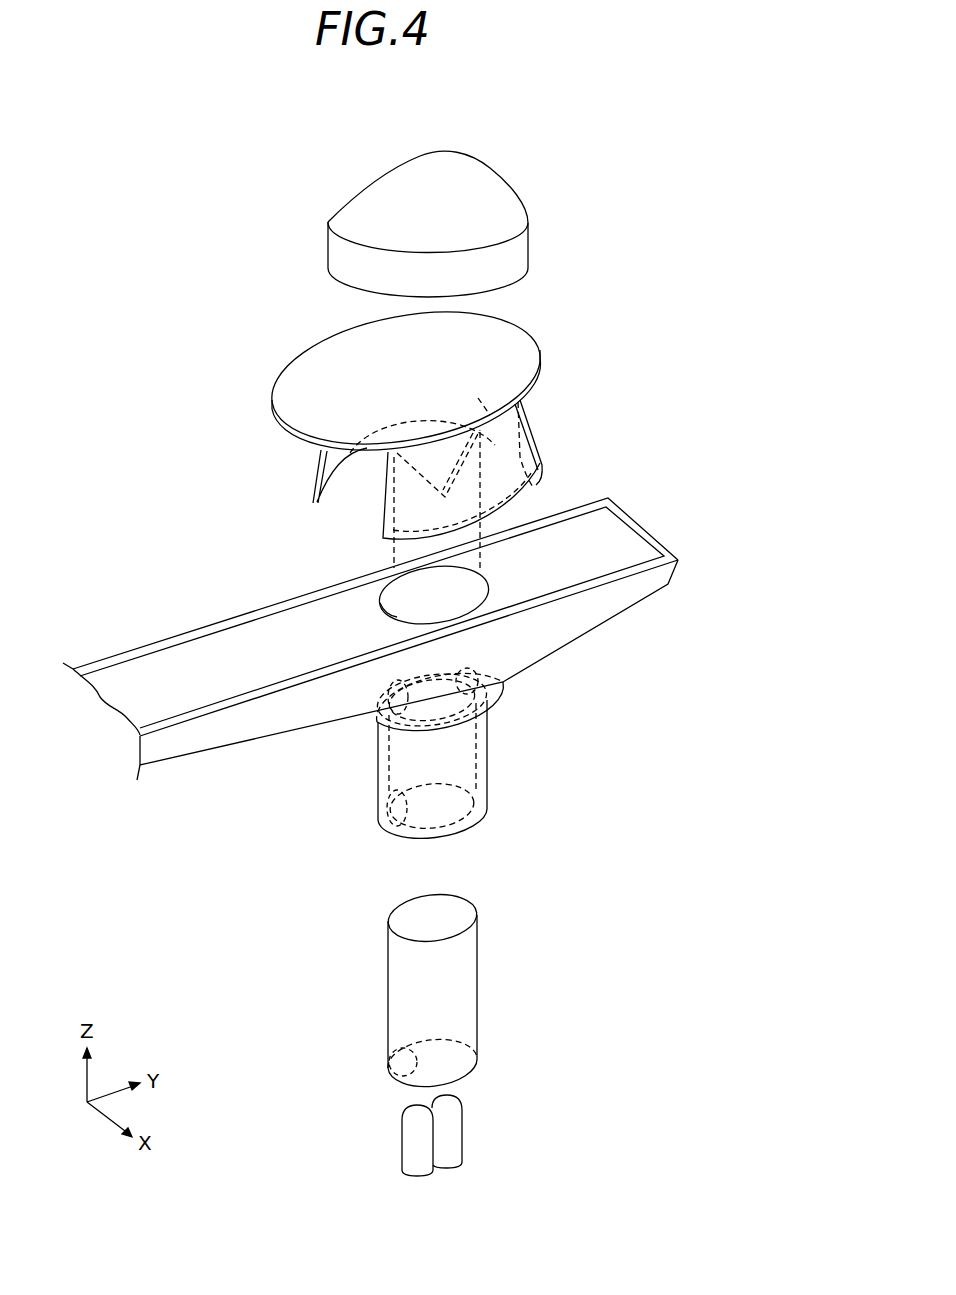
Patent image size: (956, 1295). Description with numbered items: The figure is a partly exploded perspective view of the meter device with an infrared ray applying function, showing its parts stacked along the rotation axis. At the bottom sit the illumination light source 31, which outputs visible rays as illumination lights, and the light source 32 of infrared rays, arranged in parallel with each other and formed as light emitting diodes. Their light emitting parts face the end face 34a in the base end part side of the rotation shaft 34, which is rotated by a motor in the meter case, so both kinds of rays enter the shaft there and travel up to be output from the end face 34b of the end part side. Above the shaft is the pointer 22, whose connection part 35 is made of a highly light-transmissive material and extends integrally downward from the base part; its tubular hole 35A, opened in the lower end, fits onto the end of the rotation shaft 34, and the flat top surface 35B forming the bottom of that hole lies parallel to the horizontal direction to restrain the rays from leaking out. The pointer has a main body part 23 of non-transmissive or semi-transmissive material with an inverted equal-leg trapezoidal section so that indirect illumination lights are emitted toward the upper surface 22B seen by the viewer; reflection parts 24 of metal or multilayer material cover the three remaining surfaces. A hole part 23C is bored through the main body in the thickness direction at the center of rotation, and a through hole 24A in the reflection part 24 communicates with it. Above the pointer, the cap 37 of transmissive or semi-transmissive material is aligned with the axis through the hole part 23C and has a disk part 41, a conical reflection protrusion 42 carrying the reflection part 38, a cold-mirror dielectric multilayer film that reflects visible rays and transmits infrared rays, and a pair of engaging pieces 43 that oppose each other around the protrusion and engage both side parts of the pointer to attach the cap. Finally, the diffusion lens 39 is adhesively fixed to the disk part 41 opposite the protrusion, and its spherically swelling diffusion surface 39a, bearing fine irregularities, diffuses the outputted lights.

The pointer 22 is at (371, 683).
The upper surface 22B is at (540, 562).
The main body part 23 is at (623, 538).
The hole part 23C is at (382, 597).
The reflection part 24 is at (643, 585).
The through hole 24A is at (438, 733).
The illumination light source 31 is at (453, 1133).
The light source of infrared rays 32 is at (413, 1140).
The rotation shaft 34 is at (432, 991).
The end face in base end part side 34a is at (400, 1067).
The end face of end part side 34b is at (457, 907).
The connection part 35 is at (463, 777).
The tubular hole 35A is at (397, 828).
The top surface 35B is at (495, 693).
The cap 37 is at (379, 378).
The reflection part 38 is at (410, 494).
The diffusion lens 39 is at (395, 214).
The diffusion surface 39a is at (368, 198).
The disk part 41 is at (308, 378).
The reflection protrusion 42 is at (433, 470).
The engaging pieces 43 is at (515, 453).